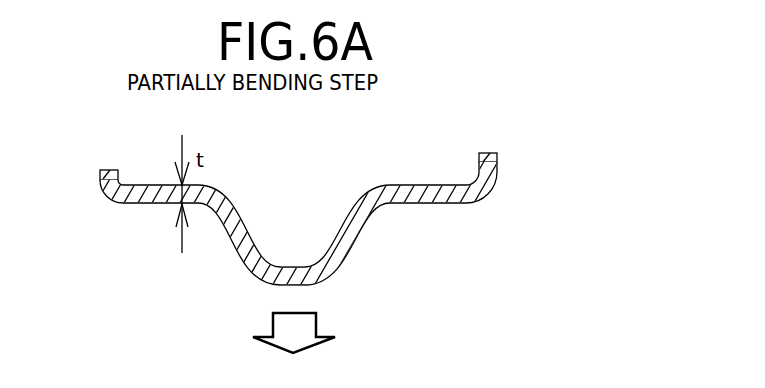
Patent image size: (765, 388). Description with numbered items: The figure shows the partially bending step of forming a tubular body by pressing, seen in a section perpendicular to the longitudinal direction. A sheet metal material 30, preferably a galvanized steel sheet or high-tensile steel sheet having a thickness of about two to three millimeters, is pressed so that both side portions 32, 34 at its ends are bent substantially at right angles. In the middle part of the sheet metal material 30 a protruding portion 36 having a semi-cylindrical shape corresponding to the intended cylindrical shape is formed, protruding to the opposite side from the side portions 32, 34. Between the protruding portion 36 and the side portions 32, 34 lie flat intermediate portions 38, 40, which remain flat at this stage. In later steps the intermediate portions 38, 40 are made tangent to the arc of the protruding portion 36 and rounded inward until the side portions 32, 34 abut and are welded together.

The sheet metal material 30 is at (391, 140).
The side portion 32 is at (486, 160).
The side portion 34 is at (110, 177).
The protruding portion 36 is at (292, 274).
The intermediate portion 38 is at (423, 192).
The intermediate portion 40 is at (150, 192).